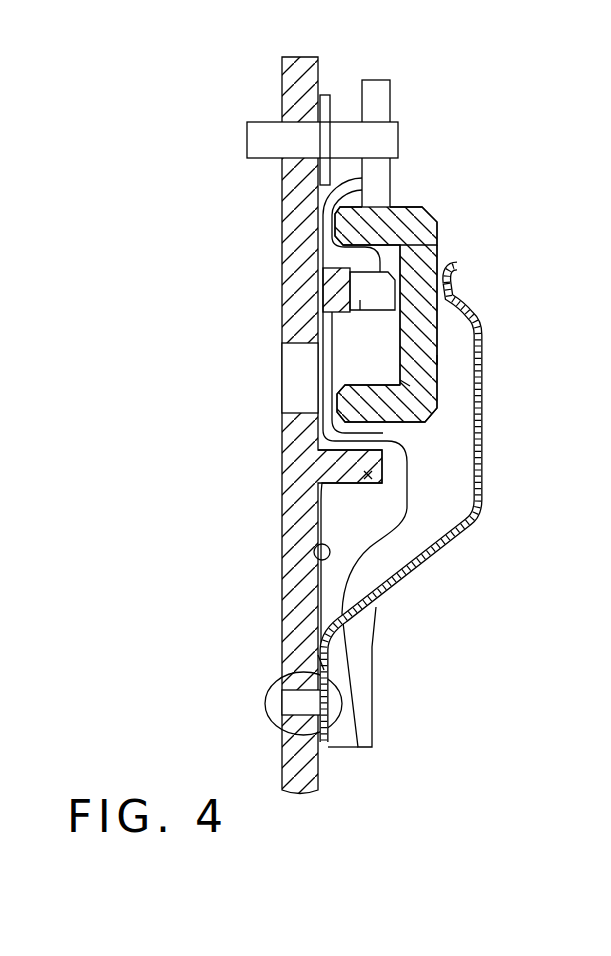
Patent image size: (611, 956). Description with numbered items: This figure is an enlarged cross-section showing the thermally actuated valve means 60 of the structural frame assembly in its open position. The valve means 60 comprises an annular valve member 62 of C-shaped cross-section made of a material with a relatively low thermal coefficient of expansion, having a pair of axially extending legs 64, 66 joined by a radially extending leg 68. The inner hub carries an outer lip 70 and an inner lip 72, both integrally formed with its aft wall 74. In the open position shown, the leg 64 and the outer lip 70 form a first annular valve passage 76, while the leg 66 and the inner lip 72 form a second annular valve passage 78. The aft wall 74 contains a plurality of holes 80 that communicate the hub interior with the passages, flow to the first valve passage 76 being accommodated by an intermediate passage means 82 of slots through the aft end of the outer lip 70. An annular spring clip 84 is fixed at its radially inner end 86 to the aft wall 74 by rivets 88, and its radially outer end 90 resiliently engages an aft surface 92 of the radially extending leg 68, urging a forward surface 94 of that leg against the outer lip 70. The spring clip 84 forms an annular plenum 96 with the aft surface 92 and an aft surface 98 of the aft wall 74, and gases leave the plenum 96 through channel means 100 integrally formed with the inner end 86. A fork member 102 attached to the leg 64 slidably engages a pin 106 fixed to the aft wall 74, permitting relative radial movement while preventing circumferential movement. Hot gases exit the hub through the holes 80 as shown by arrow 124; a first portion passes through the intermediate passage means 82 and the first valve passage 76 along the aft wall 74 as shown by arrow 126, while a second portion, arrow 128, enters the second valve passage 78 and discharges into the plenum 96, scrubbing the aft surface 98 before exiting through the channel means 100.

The thermally actuated valve means 60 is at (488, 150).
The annular valve member 62 is at (441, 318).
The axially extending leg 64 is at (407, 212).
The axially extending leg 66 is at (400, 412).
The radially extending leg 68 is at (483, 331).
The outer lip 70 is at (340, 280).
The inner lip 72 is at (368, 480).
The aft wall 74 is at (300, 605).
The first annular valve passage 76 is at (432, 258).
The second annular valve passage 78 is at (330, 440).
The holes 80 is at (295, 365).
The intermediate passage means 82 is at (345, 316).
The annular spring clip 84 is at (432, 504).
The radially inner end 86 is at (318, 663).
The rivets 88 is at (273, 713).
The radially outer end 90 is at (462, 291).
The aft surface 92 is at (438, 360).
The forward surface 94 is at (400, 383).
The annular plenum 96 is at (443, 532).
The aft surface 98 is at (314, 552).
The channel means 100 is at (367, 700).
The fork members 102 is at (373, 84).
The pin 106 is at (262, 127).
The arrow 124 is at (306, 380).
The arrow 126 is at (327, 192).
The arrow 128 is at (357, 750).